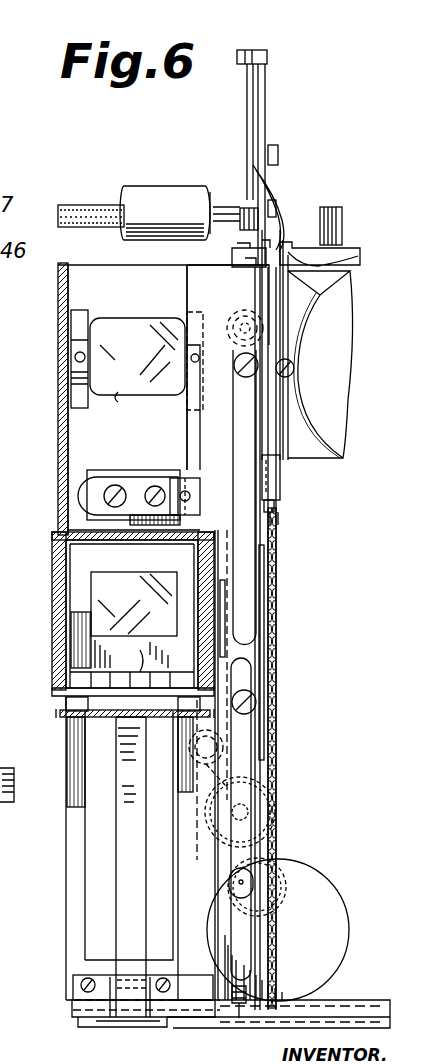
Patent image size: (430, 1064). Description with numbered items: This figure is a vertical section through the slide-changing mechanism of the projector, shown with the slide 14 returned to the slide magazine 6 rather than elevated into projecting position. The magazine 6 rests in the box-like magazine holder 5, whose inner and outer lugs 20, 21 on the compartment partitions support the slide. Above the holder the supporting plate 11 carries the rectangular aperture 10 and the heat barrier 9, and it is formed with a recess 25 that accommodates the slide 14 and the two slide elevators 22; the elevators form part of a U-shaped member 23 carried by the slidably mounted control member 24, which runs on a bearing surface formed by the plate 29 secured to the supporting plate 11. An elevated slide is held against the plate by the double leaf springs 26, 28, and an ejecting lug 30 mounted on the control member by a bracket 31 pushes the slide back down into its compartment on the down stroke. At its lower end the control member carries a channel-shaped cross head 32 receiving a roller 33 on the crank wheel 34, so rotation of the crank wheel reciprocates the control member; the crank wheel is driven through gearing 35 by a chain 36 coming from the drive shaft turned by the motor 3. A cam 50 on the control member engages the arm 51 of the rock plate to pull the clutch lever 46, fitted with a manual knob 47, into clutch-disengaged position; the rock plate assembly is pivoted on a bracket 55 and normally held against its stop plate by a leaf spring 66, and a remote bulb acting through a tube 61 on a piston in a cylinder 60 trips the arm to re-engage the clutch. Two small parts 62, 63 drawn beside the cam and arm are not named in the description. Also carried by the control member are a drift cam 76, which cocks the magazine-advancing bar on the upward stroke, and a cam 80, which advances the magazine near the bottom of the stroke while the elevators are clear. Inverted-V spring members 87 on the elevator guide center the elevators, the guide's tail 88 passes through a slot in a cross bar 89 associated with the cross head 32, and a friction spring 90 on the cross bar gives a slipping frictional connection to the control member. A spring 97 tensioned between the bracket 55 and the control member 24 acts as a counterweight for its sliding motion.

The motor 3 is at (346, 320).
The magazine holder 5 is at (54, 586).
The slide magazine 6 is at (54, 614).
The heat barrier 9 is at (137, 356).
The rectangular aperture 10 is at (119, 391).
The supporting plate 11 is at (70, 440).
The slide 14 is at (85, 650).
The inner lugs 20 is at (125, 672).
The outer lugs 21 is at (80, 675).
The slide elevators 22 is at (72, 842).
The U-shaped member 23 is at (72, 944).
The control member 24 is at (210, 335).
The recess 25 is at (94, 272).
The spring 26 is at (78, 330).
The spring 28 is at (192, 403).
The plate 29 is at (187, 294).
The ejecting lug 30 is at (92, 479).
The bracket 31 is at (190, 478).
The cross head 32 is at (0, 782).
The roller 33 is at (266, 1004).
The crank wheel 34 is at (325, 908).
The gearing 35 is at (265, 838).
The chain 36 is at (278, 672).
The clutch lever 46 is at (310, 260).
The knob 47 is at (342, 222).
The cam 50 is at (276, 490).
The arm 51 is at (280, 246).
The bracket 55 is at (266, 95).
The cylinder 60 is at (184, 176).
The tube 61 is at (93, 210).
The slide block 62 is at (282, 477).
The pin 63 is at (280, 514).
The leaf spring 66 is at (274, 185).
The drift cam 76 is at (218, 940).
The cam 80 is at (236, 620).
The spring members 87 is at (66, 700).
The tail 88 is at (128, 873).
The cross bar 89 is at (100, 1022).
The friction spring 90 is at (112, 992).
The spring 97 is at (236, 208).